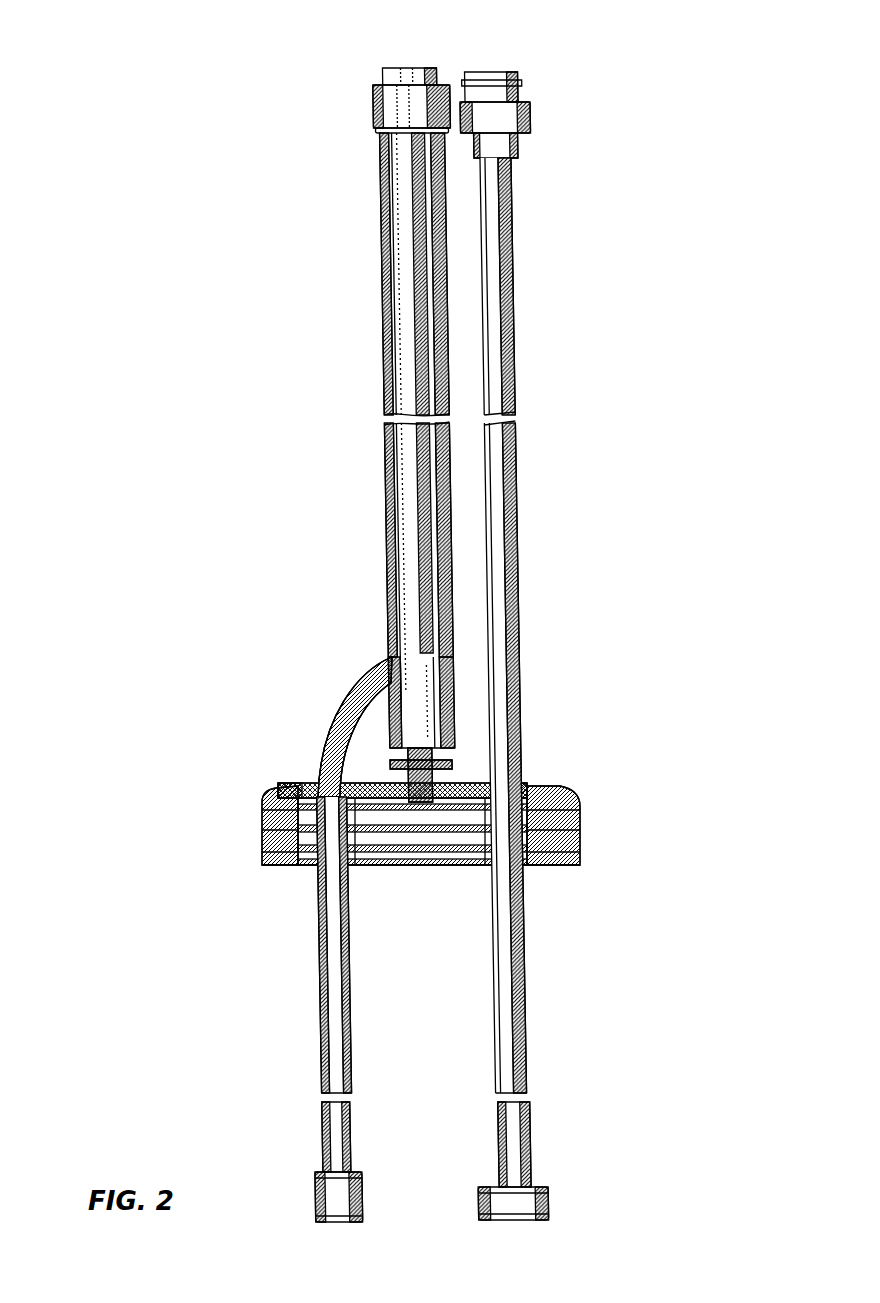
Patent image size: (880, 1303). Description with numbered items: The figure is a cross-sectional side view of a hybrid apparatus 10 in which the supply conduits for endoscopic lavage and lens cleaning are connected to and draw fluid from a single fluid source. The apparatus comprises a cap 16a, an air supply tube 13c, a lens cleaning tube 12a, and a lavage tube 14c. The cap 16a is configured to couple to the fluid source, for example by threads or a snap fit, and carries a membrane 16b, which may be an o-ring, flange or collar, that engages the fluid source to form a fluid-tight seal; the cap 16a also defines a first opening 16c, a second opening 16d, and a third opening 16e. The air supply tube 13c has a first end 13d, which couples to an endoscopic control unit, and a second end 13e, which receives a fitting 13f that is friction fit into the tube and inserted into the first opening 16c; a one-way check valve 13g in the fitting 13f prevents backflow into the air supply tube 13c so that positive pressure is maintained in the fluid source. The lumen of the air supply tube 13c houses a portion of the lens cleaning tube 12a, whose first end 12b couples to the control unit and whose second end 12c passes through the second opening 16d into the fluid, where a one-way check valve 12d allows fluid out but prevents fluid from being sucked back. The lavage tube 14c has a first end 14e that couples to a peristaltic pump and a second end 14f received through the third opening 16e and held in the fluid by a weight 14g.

The hybrid apparatus 10 is at (222, 112).
The lens cleaning tube 12a is at (322, 995).
The first end of the lens cleaning tube 12b is at (386, 68).
The second end of the lens cleaning tube 12c is at (322, 1158).
The one-way check valve 12d is at (312, 1196).
The air supply tube 13c is at (384, 294).
The first end of the air supply tube 13d is at (378, 130).
The second end of the air supply tube 13e is at (452, 695).
The fitting 13f is at (391, 743).
The one-way check valve 13g is at (452, 752).
The lavage tube 14c is at (515, 262).
The first end of the lavage tube 14e is at (522, 95).
The second end of the lavage tube 14f is at (530, 1150).
The weight 14g is at (548, 1203).
The cap 16a is at (270, 800).
The membrane 16b is at (582, 830).
The first opening 16c is at (455, 785).
The second opening 16d is at (310, 780).
The third opening 16e is at (520, 780).